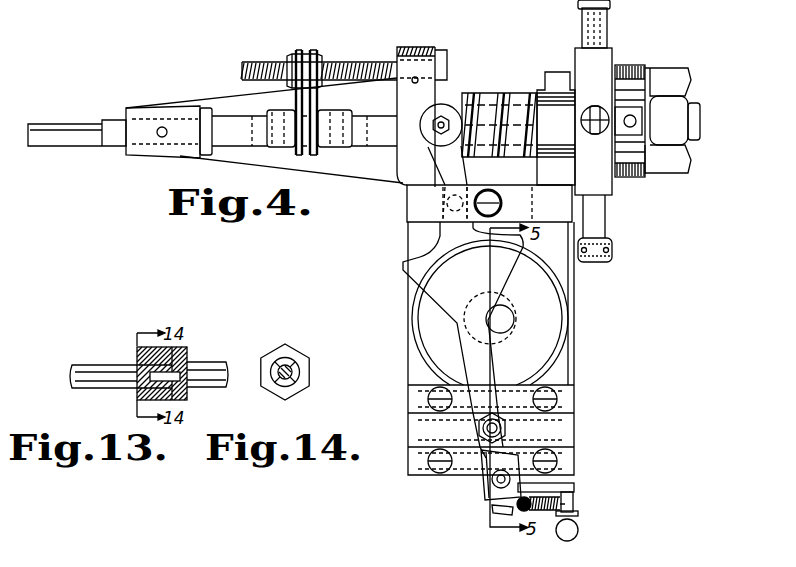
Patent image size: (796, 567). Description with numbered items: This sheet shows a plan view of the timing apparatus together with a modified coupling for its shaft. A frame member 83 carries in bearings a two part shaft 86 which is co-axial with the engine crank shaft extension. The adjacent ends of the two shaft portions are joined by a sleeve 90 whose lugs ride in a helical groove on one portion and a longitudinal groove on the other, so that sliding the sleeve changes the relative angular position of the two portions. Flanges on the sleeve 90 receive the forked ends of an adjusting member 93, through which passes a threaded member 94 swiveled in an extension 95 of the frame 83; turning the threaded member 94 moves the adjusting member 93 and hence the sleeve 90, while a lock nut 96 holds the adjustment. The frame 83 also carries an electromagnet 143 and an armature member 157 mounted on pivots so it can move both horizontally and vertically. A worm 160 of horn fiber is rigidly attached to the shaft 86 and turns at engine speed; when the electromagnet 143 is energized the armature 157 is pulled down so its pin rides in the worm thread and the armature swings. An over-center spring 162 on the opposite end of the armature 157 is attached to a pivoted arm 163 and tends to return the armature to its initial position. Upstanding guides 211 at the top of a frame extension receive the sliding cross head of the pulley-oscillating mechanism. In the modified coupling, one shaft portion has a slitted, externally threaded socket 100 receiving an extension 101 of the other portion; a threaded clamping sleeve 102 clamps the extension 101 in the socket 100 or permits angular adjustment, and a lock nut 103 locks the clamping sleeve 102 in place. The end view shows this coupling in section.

In FIG. 4, the two part shaft 86 is at (225, 128).
In FIG. 13, the two part shaft 86 is at (95, 372).
In FIG. 4, the sleeve 90 is at (345, 133).
In FIG. 4, the adjusting member 93 is at (300, 48).
In FIG. 4, the threaded member 94 is at (361, 62).
In FIG. 4, the extension of the frame 95 is at (431, 50).
In FIG. 4, the lock nut 96 is at (311, 50).
In FIG. 4, the worm 160 is at (495, 97).
In FIG. 4, the upstanding guides 211 is at (678, 96).
In FIG. 4, the frame member 83 is at (394, 236).
In FIG. 4, the armature member 157 is at (418, 270).
In FIG. 4, the electromagnet 143 is at (550, 327).
In FIG. 4, the arm 163 is at (567, 494).
In FIG. 4, the spring 162 is at (574, 541).
In FIG. 13, the socket 100 is at (187, 386).
In FIG. 13, the extension 101 is at (136, 389).
In FIG. 13, the clamping sleeve 102 is at (140, 351).
In FIG. 13, the lock nut 103 is at (178, 350).